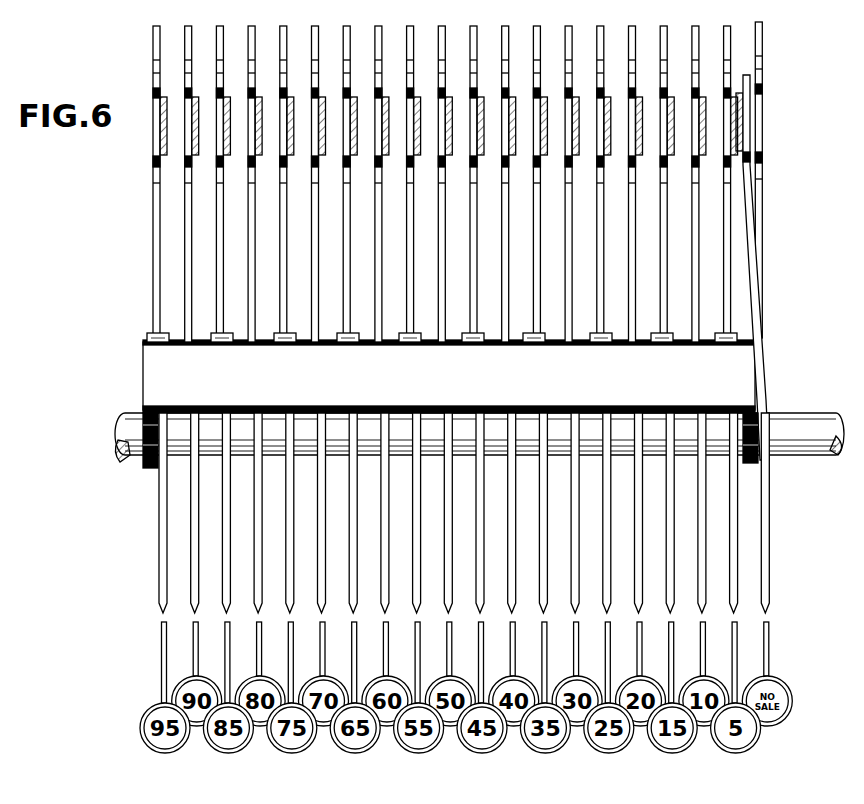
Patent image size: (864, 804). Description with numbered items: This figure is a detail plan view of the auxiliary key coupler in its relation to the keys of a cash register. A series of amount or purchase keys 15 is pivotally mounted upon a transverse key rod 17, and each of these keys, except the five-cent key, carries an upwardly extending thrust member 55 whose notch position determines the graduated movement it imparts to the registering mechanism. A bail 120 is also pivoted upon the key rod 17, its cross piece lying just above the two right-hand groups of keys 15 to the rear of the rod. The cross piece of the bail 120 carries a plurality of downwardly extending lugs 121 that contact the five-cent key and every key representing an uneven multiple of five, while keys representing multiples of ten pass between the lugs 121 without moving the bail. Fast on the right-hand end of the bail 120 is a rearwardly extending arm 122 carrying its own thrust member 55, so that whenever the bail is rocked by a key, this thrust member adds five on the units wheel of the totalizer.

The purchase keys 15 is at (153, 230).
The thrust member 55 is at (194, 108).
The bail 120 is at (143, 367).
The lugs 121 is at (157, 333).
The arm 122 is at (750, 246).
The key rod 17 is at (786, 422).